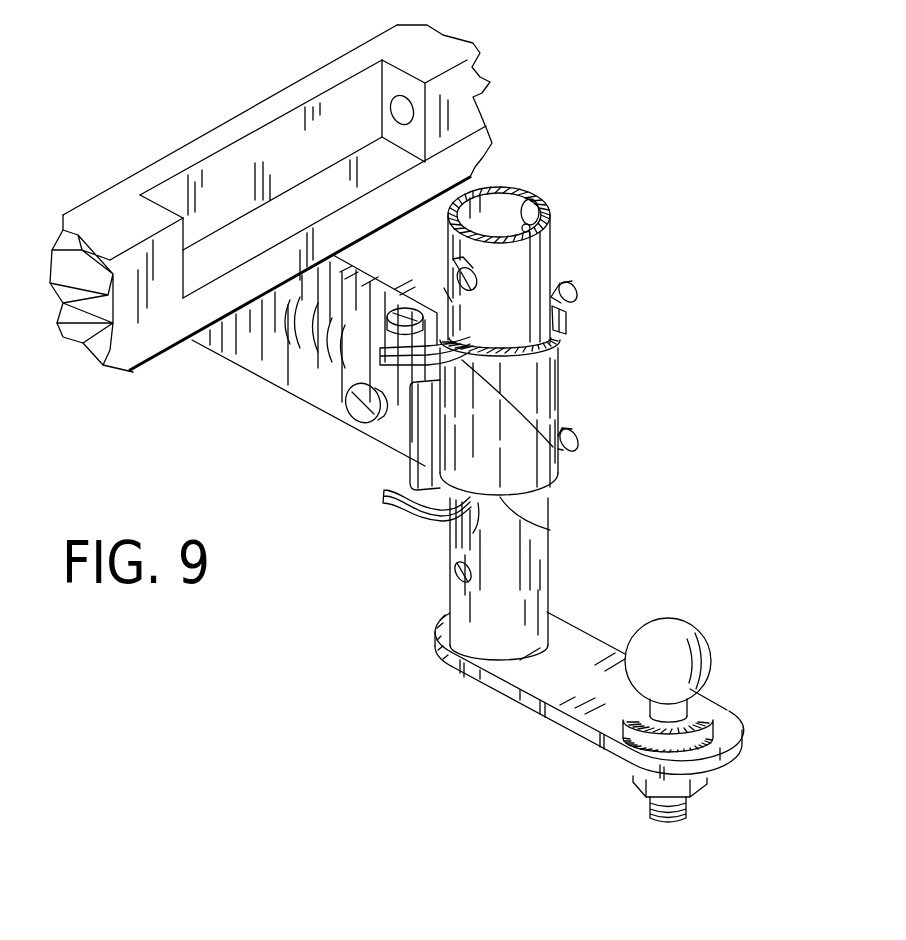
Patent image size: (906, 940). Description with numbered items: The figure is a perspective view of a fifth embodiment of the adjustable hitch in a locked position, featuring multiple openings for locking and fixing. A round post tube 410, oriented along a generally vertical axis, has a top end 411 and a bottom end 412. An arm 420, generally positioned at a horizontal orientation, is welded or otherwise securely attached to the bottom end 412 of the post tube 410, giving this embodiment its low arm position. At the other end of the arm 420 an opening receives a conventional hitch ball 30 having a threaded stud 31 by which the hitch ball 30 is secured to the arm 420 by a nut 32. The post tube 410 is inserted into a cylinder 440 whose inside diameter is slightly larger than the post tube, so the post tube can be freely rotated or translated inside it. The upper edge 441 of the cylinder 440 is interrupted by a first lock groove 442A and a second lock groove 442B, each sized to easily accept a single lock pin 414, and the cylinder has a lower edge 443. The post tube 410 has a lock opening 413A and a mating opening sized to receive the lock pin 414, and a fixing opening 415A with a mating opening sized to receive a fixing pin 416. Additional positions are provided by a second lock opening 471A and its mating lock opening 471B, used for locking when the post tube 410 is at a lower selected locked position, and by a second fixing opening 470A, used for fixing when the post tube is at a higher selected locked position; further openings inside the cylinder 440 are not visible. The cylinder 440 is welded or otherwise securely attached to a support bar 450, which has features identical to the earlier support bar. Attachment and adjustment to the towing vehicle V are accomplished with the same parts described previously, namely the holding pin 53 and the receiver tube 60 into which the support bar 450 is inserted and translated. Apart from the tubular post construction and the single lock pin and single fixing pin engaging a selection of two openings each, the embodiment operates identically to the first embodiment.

The towing vehicle V is at (467, 115).
The receiver tube 60 is at (247, 373).
The holding pin 53 is at (357, 410).
The support bar 450 is at (427, 457).
The fixing pin 416 is at (380, 507).
The top end 411 is at (552, 215).
The second lock opening 471A is at (473, 270).
The mating lock opening 471B is at (524, 222).
The lock pin 414 is at (573, 285).
The lock opening 413A is at (447, 293).
The upper edge 441 is at (560, 342).
The second lock groove 442B is at (562, 315).
The cylinder 440 is at (560, 412).
The first lock groove 442A is at (560, 468).
The post tube 410 is at (560, 499).
The lower edge 443 is at (560, 529).
The fixing opening 415A is at (456, 545).
The second fixing opening 470A is at (452, 577).
The bottom end 412 is at (437, 640).
The arm 420 is at (535, 727).
The hitch ball 30 is at (685, 620).
The nut 32 is at (707, 788).
The threaded stud 31 is at (688, 815).